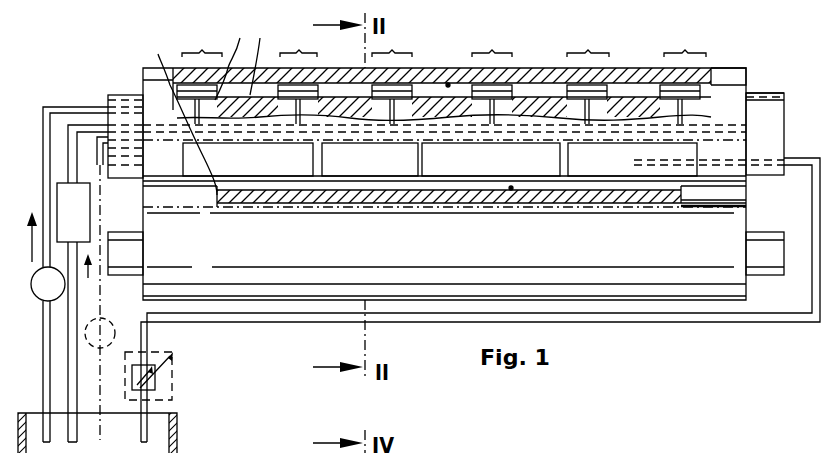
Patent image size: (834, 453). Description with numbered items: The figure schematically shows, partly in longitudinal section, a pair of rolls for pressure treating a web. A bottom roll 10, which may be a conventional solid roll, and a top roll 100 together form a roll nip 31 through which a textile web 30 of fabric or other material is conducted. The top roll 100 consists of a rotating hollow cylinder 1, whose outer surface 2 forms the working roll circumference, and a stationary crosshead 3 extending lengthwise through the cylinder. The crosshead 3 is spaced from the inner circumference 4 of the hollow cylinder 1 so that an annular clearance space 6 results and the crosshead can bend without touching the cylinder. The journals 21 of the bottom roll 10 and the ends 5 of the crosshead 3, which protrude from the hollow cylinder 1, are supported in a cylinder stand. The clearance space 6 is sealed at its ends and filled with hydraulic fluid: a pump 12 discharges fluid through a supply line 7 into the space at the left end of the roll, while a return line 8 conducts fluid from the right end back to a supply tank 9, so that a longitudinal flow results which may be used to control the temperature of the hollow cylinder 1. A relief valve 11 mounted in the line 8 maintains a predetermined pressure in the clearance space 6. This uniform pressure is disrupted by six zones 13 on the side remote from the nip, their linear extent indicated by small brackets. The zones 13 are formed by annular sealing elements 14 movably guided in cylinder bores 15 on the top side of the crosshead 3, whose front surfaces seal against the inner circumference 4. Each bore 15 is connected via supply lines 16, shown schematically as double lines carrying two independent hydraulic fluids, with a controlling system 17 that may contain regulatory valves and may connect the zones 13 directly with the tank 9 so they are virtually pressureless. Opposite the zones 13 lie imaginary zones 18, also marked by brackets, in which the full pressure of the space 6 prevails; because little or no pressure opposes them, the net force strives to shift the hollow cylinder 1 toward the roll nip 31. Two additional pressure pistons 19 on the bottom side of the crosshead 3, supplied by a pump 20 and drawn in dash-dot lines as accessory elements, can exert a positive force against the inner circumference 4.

The hollow cylinder 1 is at (640, 83).
The outer surface 2 is at (437, 68).
The crosshead 3 is at (754, 91).
The inner circumference 4 is at (448, 84).
The ends of the crosshead 5 is at (137, 95).
The clearance space 6 is at (543, 83).
The supply line 7 is at (258, 55).
The return line 8 is at (266, 323).
The supply tank 9 is at (180, 428).
The bottom roll 10 is at (737, 227).
The relief valve 11 is at (136, 388).
The pump 12 is at (46, 300).
The zones 13 is at (200, 52).
The annular sealing elements 14 is at (622, 42).
The cylinder bores 15 is at (231, 57).
The supply lines 16 is at (88, 107).
The controlling system 17 is at (83, 228).
The imaginary zones 18 is at (259, 158).
The pressure pistons 19 is at (322, 143).
The pump 20 is at (116, 333).
The journals 21 is at (770, 260).
The textile web 30 is at (615, 205).
The roll nip 31 is at (753, 204).
The top roll 100 is at (724, 68).